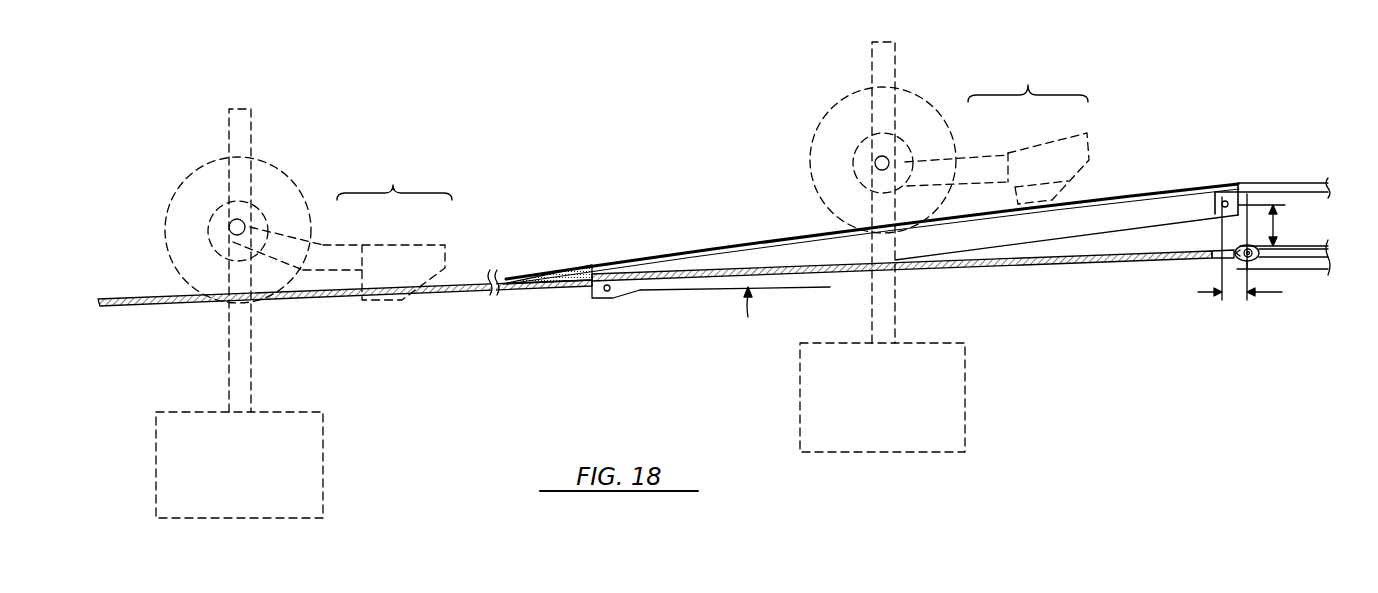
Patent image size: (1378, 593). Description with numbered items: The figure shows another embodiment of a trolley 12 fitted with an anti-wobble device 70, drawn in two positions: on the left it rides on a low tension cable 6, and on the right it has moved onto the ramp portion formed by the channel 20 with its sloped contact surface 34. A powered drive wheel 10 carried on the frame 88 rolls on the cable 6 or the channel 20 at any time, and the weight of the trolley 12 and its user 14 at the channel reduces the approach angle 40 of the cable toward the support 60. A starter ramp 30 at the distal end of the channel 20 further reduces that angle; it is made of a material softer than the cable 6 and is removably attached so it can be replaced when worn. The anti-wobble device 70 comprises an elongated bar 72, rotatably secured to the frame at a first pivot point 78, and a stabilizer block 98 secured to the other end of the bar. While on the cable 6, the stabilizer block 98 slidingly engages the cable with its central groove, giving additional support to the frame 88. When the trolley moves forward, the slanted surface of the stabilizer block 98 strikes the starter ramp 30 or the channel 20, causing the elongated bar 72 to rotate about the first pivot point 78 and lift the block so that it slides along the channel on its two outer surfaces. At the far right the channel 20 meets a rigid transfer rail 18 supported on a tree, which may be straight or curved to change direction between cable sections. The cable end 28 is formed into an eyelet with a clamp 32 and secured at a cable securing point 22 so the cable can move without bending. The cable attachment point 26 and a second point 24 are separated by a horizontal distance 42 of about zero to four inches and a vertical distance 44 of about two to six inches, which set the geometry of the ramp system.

The low tension cable 6 is at (338, 296).
The drive wheel 10 is at (283, 170).
The trolley 12 is at (611, 430).
The user 14 is at (323, 478).
The transfer rail 18 is at (1284, 184).
The channel 20 is at (1057, 240).
The cable securing point 22 is at (608, 295).
The point 24 is at (1218, 197).
The cable attachment point 26 is at (1258, 256).
The cable end 28 is at (1248, 263).
The starter ramp 30 is at (573, 270).
The clamp 32 is at (1187, 251).
The contact surface 34 is at (649, 256).
The approach angle 40 is at (746, 236).
The horizontal distance 42 is at (1270, 296).
The vertical distance 44 is at (1276, 226).
The support 60 is at (1322, 270).
The anti-wobble device 70 is at (661, 177).
The elongated bar 72 is at (335, 245).
The first pivot point 78 is at (238, 218).
The frame 88 is at (243, 108).
The stabilizer block 98 is at (408, 245).